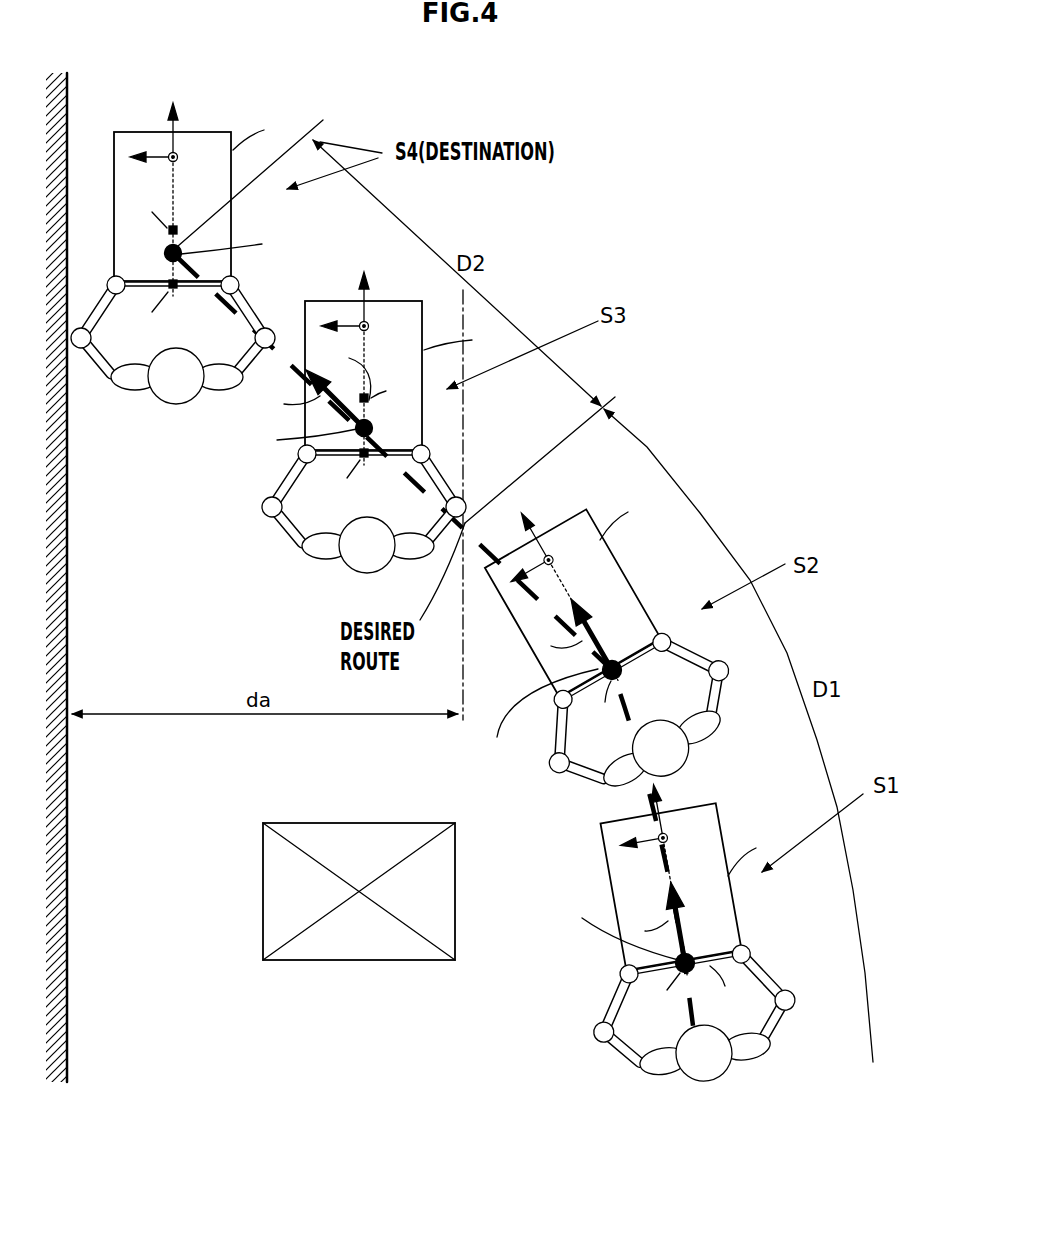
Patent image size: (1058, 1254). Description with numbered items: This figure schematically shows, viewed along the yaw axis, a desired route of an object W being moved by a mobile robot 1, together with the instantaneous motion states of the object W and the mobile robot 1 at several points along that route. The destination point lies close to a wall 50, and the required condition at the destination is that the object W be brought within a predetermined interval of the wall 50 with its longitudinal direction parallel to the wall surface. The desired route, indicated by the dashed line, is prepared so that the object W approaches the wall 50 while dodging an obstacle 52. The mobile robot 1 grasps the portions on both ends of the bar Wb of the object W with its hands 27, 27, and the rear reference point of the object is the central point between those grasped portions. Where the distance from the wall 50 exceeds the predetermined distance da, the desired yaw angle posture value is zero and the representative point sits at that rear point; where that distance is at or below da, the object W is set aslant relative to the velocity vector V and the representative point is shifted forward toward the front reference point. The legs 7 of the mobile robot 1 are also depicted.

The mobile robot 1 is at (448, 610).
The legs 7 is at (793, 1023).
The hands 27 is at (745, 953).
The wall 50 is at (68, 492).
The obstacle 52 is at (318, 822).